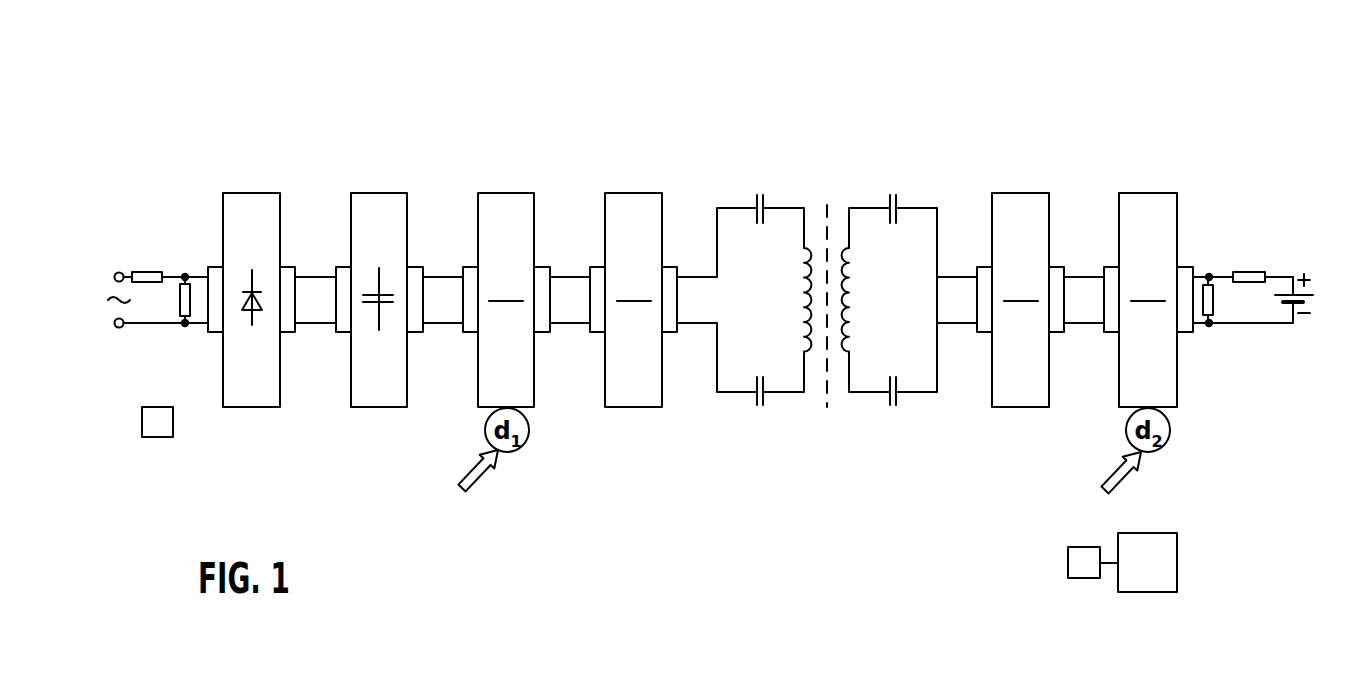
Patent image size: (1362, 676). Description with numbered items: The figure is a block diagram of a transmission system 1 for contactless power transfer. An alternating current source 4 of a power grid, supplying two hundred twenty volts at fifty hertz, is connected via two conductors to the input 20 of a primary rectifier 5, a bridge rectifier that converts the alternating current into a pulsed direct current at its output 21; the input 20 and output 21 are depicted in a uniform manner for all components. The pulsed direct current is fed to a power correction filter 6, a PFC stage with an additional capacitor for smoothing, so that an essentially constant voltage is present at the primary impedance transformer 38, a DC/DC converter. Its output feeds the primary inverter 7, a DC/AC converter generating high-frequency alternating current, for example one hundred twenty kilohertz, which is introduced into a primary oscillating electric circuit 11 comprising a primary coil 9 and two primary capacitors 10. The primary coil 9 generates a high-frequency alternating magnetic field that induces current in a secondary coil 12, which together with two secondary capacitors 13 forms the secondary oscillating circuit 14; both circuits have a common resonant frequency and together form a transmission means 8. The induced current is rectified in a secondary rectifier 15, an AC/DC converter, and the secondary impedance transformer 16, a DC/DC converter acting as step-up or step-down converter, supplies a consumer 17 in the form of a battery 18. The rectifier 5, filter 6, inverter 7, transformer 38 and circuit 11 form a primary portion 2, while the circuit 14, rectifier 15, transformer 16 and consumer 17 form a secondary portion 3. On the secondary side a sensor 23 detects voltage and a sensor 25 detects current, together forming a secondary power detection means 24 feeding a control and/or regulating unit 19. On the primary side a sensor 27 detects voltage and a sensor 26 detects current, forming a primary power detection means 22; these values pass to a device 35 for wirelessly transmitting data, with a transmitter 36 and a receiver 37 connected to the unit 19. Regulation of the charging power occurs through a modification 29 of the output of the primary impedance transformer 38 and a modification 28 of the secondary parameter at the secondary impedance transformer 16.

The transmission system 1 is at (500, 518).
The primary portion 2 is at (208, 40).
The secondary portion 3 is at (1312, 40).
The alternating current source 4 is at (120, 258).
The primary rectifier 5 is at (250, 193).
The power correction filter 6 is at (379, 193).
The primary inverter 7 is at (635, 193).
The transmission means 8 is at (827, 304).
The primary coil 9 is at (810, 259).
The primary capacitors 10 is at (757, 205).
The primary oscillating electric circuit 11 is at (766, 270).
The secondary coil 12 is at (845, 259).
The secondary capacitors 13 is at (896, 205).
The secondary oscillating circuit 14 is at (889, 270).
The secondary rectifier 15 is at (1022, 193).
The secondary impedance transformer 16 is at (1146, 193).
The consumer 17 is at (1268, 256).
The battery 18 is at (1278, 292).
The control and/or regulating unit 19 is at (1177, 563).
The input 20 is at (215, 334).
The output 21 is at (288, 334).
The primary power detection means 22 is at (175, 241).
The sensor 23 is at (1215, 301).
The secondary power detection means 24 is at (1264, 253).
The sensor 25 is at (1248, 271).
The sensor 26 is at (145, 271).
The sensor 27 is at (180, 285).
The modification of a secondary parameter 28 is at (1107, 470).
The modification 29 is at (470, 468).
The device for wirelessly transmitting data 35 is at (207, 428).
The transmitter 36 is at (173, 423).
The receiver 37 is at (1068, 563).
The primary impedance transformer 38 is at (508, 193).